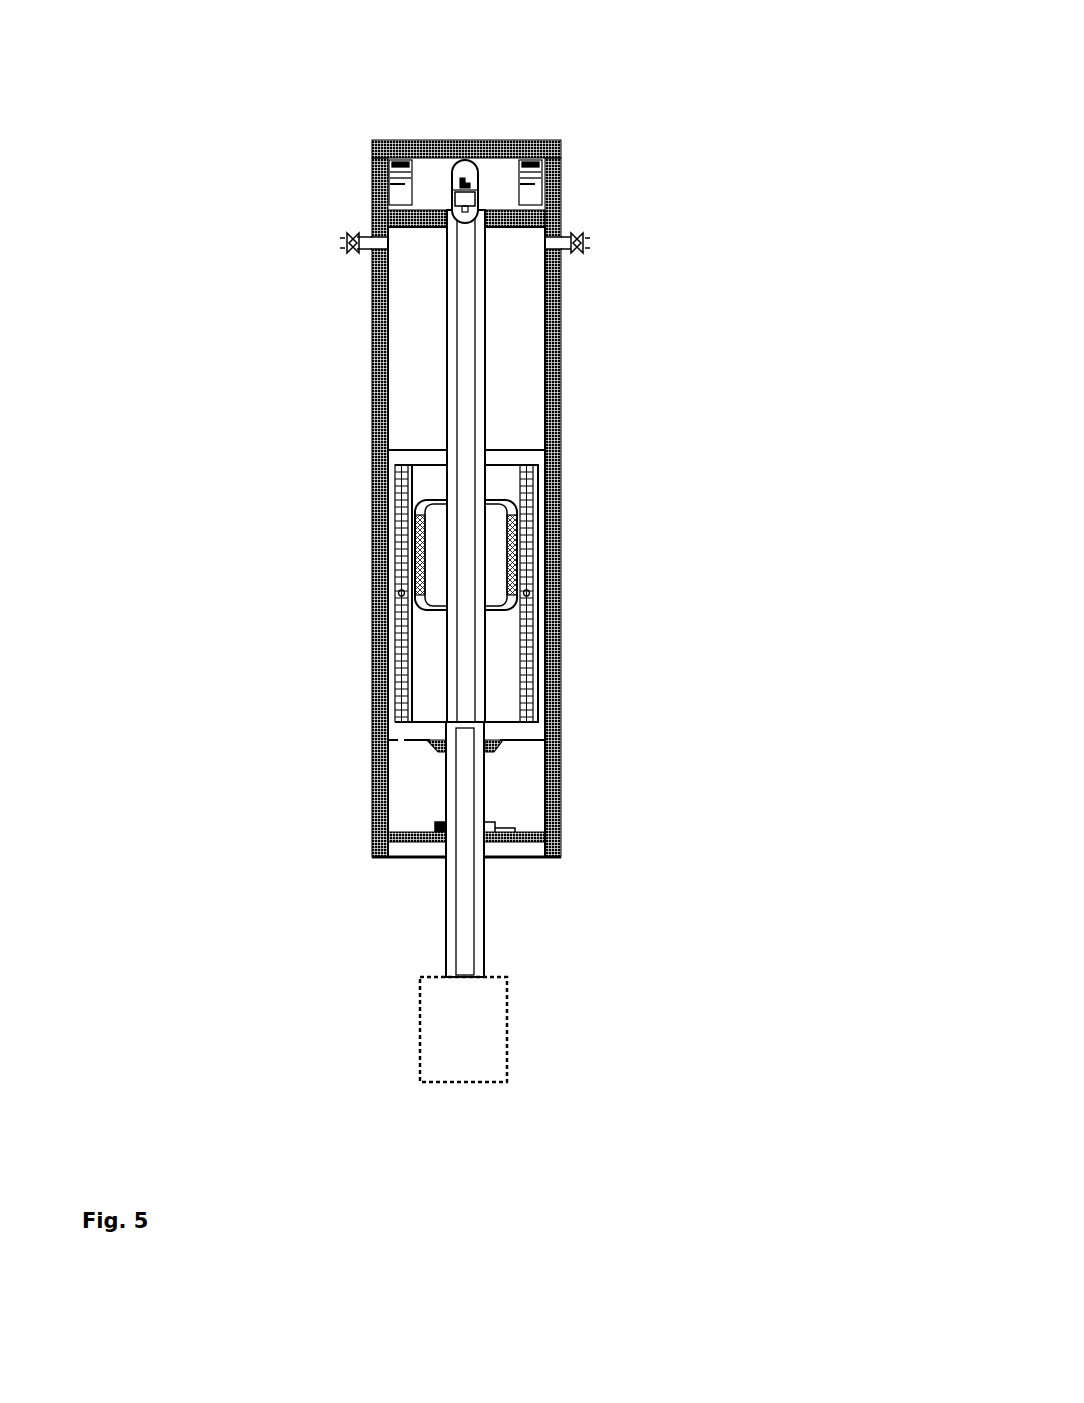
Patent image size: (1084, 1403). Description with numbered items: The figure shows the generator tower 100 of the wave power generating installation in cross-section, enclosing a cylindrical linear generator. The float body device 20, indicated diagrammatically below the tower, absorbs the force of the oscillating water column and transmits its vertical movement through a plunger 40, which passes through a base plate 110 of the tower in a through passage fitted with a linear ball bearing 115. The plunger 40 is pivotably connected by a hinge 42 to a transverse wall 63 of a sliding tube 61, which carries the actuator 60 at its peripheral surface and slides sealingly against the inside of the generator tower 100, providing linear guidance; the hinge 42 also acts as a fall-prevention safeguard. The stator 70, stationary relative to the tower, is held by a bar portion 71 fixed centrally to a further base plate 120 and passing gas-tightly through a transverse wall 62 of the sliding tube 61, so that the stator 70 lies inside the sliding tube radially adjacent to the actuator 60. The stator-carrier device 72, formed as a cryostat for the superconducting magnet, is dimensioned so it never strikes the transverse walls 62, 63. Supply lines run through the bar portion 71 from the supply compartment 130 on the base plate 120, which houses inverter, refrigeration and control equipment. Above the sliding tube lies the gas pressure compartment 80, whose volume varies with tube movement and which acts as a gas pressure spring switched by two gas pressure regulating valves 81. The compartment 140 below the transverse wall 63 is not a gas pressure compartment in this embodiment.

The float body device 20 is at (493, 1033).
The plunger 40 is at (465, 893).
The hinge 42 is at (438, 750).
The actuator 60 is at (525, 612).
The sliding tube 61 is at (535, 628).
The transverse wall 62 is at (520, 447).
The transverse wall 63 is at (525, 727).
The stator 70 is at (527, 515).
The bar portion 71 is at (473, 332).
The stator-carrier device 72 is at (497, 541).
The gas pressure compartment 80 is at (410, 366).
The gas pressure regulating valves 81 is at (353, 233).
The generator tower 100 is at (550, 382).
The base plate 110 is at (527, 830).
The linear ball bearing 115 is at (425, 842).
The further base plate 120 is at (537, 220).
The supply compartment 130 is at (498, 172).
The compartment 140 is at (397, 808).